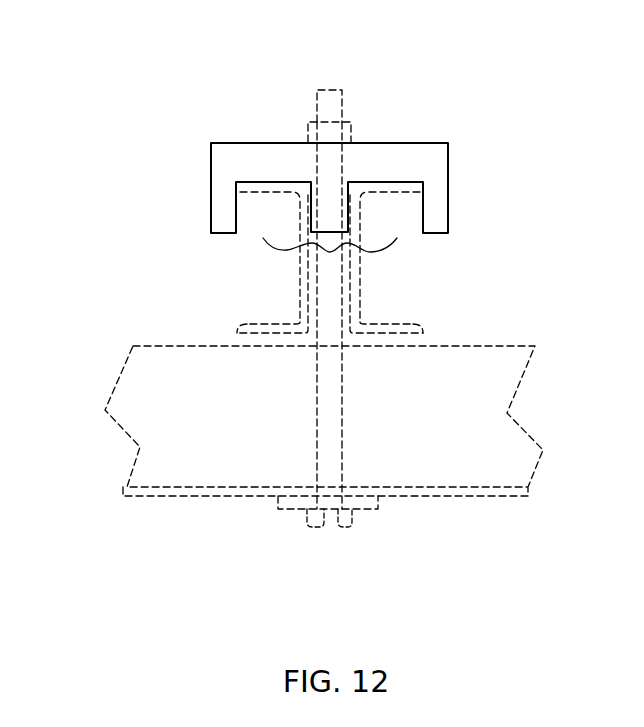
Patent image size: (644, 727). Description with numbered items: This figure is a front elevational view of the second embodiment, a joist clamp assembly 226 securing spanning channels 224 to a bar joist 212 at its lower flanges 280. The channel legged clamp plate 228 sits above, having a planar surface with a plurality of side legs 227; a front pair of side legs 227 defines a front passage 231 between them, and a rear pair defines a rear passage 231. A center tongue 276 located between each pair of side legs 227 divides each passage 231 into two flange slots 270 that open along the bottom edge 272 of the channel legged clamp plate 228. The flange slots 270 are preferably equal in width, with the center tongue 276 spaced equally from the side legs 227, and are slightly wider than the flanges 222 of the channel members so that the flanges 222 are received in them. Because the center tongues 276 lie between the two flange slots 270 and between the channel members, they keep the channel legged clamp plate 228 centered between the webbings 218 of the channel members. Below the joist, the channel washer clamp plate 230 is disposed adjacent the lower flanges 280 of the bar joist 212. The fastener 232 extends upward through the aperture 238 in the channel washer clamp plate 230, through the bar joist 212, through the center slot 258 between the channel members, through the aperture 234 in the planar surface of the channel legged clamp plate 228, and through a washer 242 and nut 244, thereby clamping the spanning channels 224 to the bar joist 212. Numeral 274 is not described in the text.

The bar joist 212 is at (485, 367).
The webbing 218 is at (326, 225).
The flange 222 is at (257, 325).
The spanning channel 224 is at (240, 328).
The joist clamp assembly 226 is at (533, 108).
The side leg 227 is at (220, 193).
The channel legged clamp plate 228 is at (373, 155).
The channel washer clamp plate 230 is at (372, 505).
The passage 231 is at (330, 252).
The fastener 232 is at (325, 438).
The aperture 234 is at (308, 141).
The aperture 238 is at (317, 497).
The washer 242 is at (350, 142).
The nut 244 is at (347, 122).
The center slot 258 is at (288, 182).
The flange slot 270 is at (261, 182).
The bottom edge 272 is at (220, 233).
The slot wall 274 is at (310, 183).
The center tongue 276 is at (301, 211).
The lower flange 280 is at (455, 496).